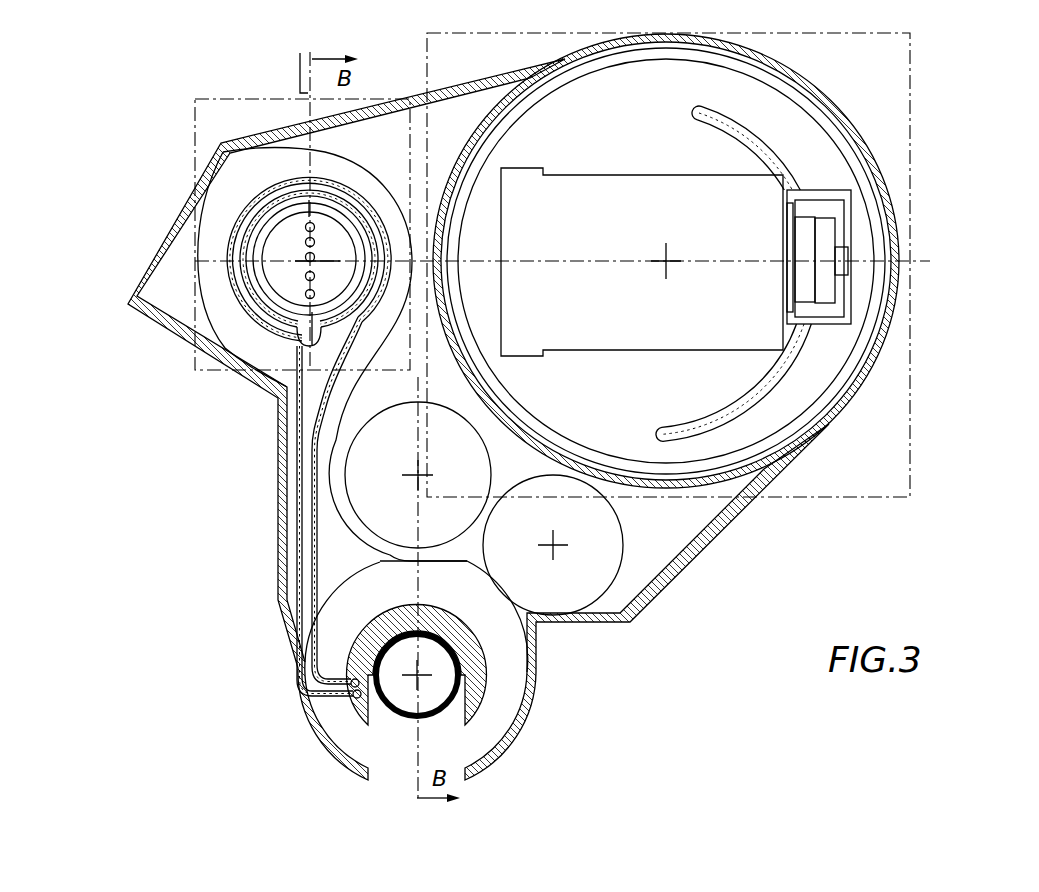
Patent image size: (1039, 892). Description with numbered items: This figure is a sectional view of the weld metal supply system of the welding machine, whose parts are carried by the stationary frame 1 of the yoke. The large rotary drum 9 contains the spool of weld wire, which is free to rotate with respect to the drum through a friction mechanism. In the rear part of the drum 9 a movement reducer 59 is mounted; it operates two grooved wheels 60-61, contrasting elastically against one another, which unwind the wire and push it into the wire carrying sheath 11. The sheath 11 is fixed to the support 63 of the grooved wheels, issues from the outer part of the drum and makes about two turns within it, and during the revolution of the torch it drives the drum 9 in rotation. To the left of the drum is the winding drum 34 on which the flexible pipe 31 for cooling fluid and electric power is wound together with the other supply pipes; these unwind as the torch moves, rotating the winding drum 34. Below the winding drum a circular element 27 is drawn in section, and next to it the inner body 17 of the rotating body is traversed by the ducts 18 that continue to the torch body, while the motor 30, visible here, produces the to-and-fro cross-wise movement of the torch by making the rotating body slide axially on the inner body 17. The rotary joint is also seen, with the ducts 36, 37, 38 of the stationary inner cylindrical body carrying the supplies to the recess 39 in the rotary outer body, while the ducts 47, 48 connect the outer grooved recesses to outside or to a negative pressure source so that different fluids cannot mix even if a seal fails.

The stationary frame of the yoke 1 is at (422, 97).
The rotating drum 9 is at (678, 97).
The wire carrying sheath 11 is at (793, 390).
The inner body of the rotating body 17 is at (352, 708).
The ducts 18 is at (348, 690).
The roller 27 is at (362, 466).
The motor 30 is at (575, 593).
The flexible pipe 31 is at (303, 343).
The winding drum 34 is at (327, 158).
The duct 36 is at (306, 224).
The duct 37 is at (306, 240).
The duct 38 is at (305, 256).
The recess 39 is at (320, 215).
The duct 47 is at (306, 275).
The duct 48 is at (306, 293).
The movement reducer 59 is at (710, 190).
The grooved wheels 60-61 is at (826, 236).
The support of the grooved wheels 63 is at (848, 312).